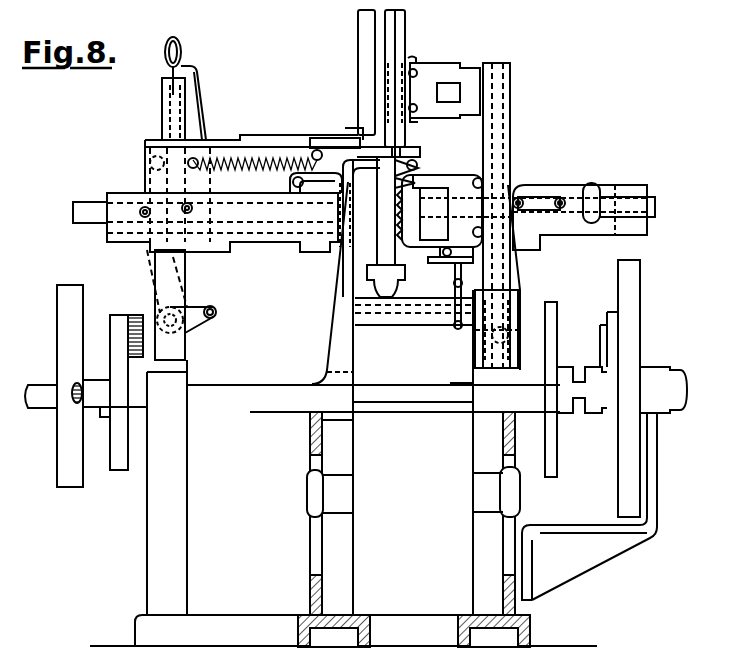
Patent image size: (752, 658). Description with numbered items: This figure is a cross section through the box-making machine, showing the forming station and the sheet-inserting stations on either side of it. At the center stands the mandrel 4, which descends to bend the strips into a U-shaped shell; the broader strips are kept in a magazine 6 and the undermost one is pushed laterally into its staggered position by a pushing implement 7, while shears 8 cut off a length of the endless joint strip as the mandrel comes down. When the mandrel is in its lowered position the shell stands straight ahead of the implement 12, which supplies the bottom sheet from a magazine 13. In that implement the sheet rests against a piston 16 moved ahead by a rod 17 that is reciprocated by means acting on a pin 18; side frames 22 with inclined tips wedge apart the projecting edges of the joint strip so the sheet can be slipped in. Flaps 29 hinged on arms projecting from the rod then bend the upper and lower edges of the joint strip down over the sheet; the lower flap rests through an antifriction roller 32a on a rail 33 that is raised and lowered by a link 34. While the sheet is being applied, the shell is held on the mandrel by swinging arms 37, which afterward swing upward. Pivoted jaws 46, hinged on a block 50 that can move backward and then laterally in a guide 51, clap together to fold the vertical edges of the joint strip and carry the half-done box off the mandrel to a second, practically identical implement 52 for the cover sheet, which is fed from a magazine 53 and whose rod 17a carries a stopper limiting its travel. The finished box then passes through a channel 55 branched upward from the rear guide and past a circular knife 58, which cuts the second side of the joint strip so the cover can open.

The mandrel 4 is at (437, 75).
The magazine 6 is at (393, 32).
The pushing implement 7 is at (317, 138).
The shears 8 is at (416, 163).
The implement 12 is at (317, 245).
The magazine 13 is at (270, 232).
The piston 16 is at (332, 250).
The rod 17 is at (90, 212).
The rod 17a is at (640, 206).
The pin 18 is at (188, 250).
The side frames 22 is at (392, 200).
The flaps 29 is at (302, 236).
The antifriction roller 32a is at (473, 257).
The rail 33 is at (447, 263).
The link 34 is at (458, 305).
The swinging arms 37 is at (412, 60).
The pivoted jaws 46 is at (378, 213).
The block 50 is at (385, 294).
The guide 51 is at (418, 318).
The implement 52 is at (463, 183).
The magazine 53 is at (580, 190).
The channel 55 is at (162, 116).
The knife 58 is at (165, 77).